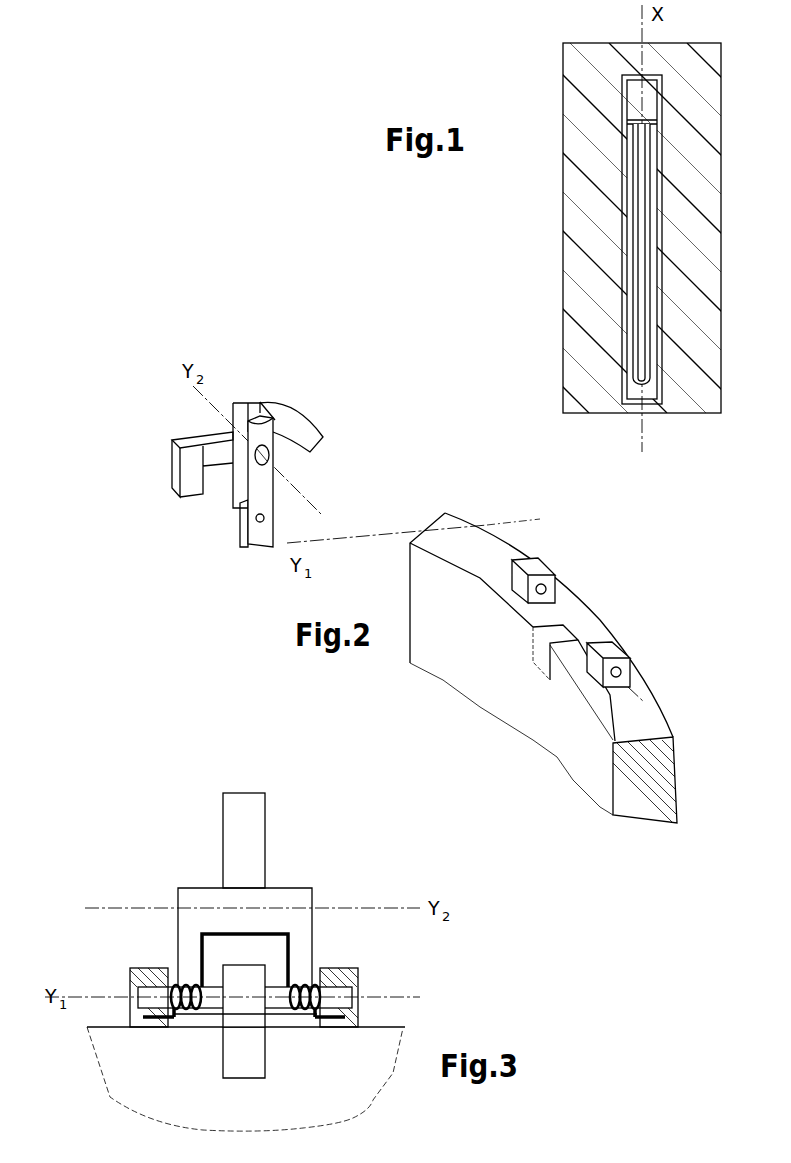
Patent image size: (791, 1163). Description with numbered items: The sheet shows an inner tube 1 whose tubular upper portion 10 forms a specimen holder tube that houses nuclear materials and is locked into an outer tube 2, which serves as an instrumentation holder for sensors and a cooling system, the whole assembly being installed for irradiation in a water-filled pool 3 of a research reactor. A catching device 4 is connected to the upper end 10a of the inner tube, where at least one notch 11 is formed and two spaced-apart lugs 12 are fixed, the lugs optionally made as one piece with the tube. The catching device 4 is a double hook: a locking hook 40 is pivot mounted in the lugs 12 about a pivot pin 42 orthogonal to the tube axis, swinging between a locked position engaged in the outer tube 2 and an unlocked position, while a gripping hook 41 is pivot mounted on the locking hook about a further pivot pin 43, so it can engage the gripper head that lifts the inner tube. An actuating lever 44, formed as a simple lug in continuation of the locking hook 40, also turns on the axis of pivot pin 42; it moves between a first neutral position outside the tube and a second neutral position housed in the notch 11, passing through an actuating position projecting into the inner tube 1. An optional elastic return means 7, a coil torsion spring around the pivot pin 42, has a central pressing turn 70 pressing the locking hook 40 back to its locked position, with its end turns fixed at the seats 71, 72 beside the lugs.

In FIG. 1, the inner tube 1 is at (624, 350).
In FIG. 1, the outer tube 2 is at (608, 217).
In FIG. 1, the water-filled pool 3 is at (703, 240).
In FIG. 2, the catching device 4 is at (173, 410).
In FIG. 3, the elastic return means 7 is at (300, 985).
In FIG. 1, the tubular upper portion 10 is at (624, 100).
In FIG. 2, the tubular upper portion 10 is at (587, 671).
In FIG. 3, the tubular upper portion 10 is at (254, 1079).
In FIG. 2, the upper end 10a is at (660, 722).
In FIG. 2, the notch 11 is at (543, 667).
In FIG. 3, the notch 11 is at (252, 1065).
In FIG. 2, the lugs 12 is at (529, 562).
In FIG. 3, the lugs 12 is at (130, 985).
In FIG. 2, the locking hook 40 is at (283, 406).
In FIG. 3, the locking hook 40 is at (283, 887).
In FIG. 2, the gripping hook 41 is at (186, 463).
In FIG. 3, the gripping hook 41 is at (235, 831).
In FIG. 2, the pivot pin 42 is at (272, 545).
In FIG. 3, the pivot pin 42 is at (355, 990).
In FIG. 2, the pivot pin 43 is at (276, 455).
In FIG. 2, the actuating lever 44 is at (238, 523).
In FIG. 3, the actuating lever 44 is at (233, 1020).
In FIG. 3, the central pressing turn 70 is at (175, 981).
In FIG. 3, the spring seat 71 is at (330, 1030).
In FIG. 3, the spring seat 72 is at (157, 1030).